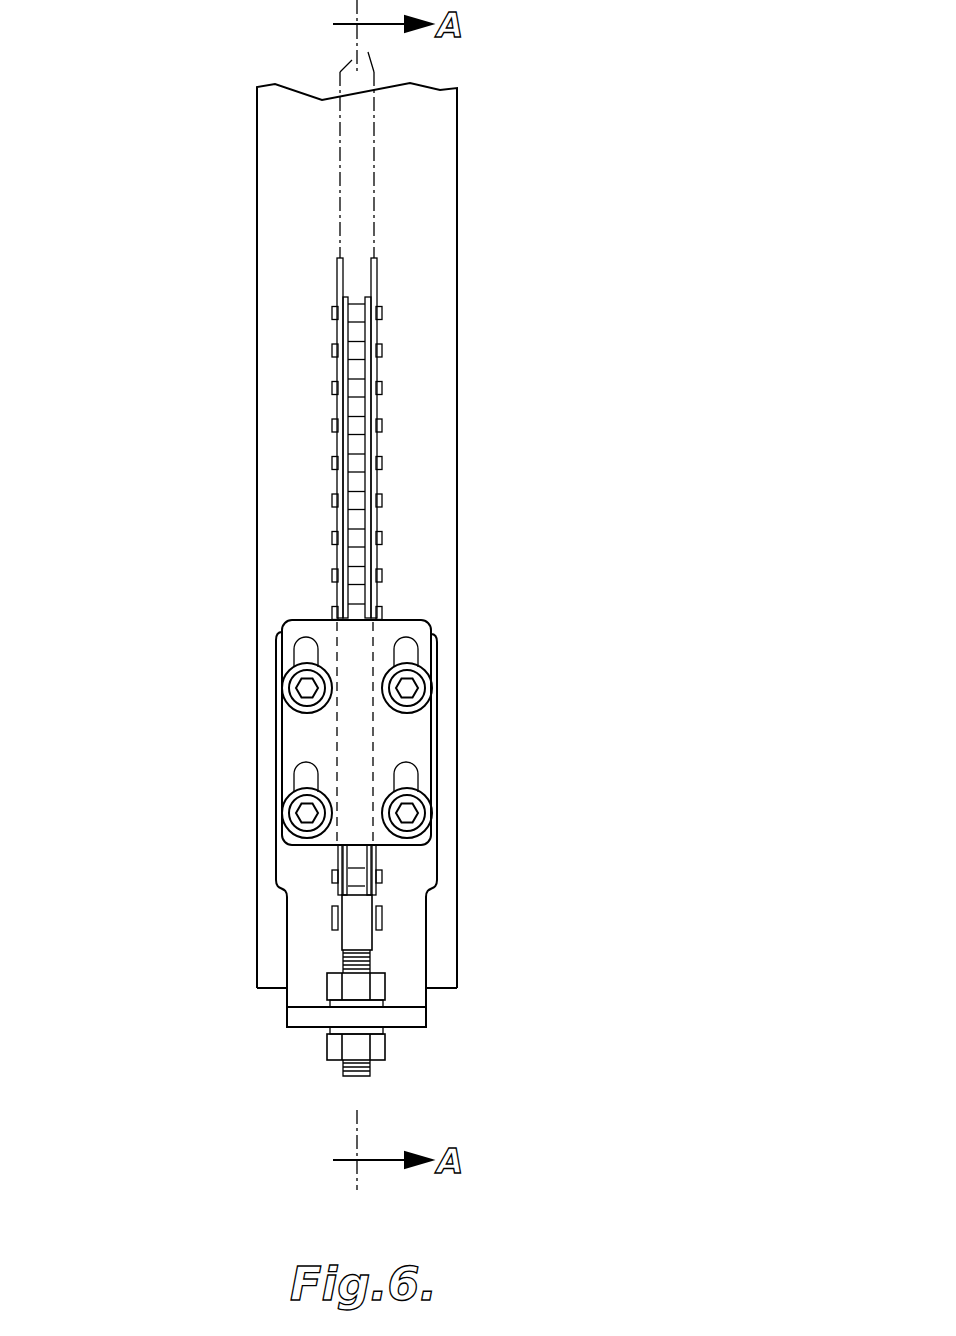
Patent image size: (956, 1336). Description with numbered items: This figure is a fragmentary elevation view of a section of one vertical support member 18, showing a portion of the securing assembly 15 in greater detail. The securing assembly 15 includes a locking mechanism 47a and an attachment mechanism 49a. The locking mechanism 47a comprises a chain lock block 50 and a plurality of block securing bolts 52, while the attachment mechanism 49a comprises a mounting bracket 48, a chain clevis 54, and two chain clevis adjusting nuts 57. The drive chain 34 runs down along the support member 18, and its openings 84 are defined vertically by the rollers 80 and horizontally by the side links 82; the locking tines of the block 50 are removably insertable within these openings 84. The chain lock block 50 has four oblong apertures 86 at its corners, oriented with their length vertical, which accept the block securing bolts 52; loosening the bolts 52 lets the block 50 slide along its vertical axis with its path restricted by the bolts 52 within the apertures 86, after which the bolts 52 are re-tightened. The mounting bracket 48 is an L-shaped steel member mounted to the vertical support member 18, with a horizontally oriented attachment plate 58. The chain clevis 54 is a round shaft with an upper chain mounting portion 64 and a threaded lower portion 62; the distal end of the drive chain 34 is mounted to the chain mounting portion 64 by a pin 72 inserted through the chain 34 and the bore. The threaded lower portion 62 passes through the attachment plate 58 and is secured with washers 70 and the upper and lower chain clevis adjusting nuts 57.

The securing assembly 15 is at (530, 1082).
The vertical support member 18 is at (457, 157).
The drive chain 34 is at (361, 562).
The left locking mechanism 47a is at (276, 598).
The mounting bracket 48 is at (278, 883).
The left attachment mechanism 49a is at (250, 1032).
The chain lock block 50 is at (360, 705).
The block securing bolt 52 is at (412, 690).
The chain clevis 54 is at (345, 948).
The chain clevis adjusting nut 57 is at (387, 985).
The attachment plate 58 is at (427, 1018).
The threaded lower portion 62 is at (342, 1076).
The chain mounting portion 64 is at (352, 915).
The washer 70 is at (387, 1003).
The pin 72 is at (383, 915).
The roller 80 is at (357, 314).
The side link 82 is at (337, 270).
The locking opening 84 is at (362, 408).
The oblong aperture 86 is at (410, 650).